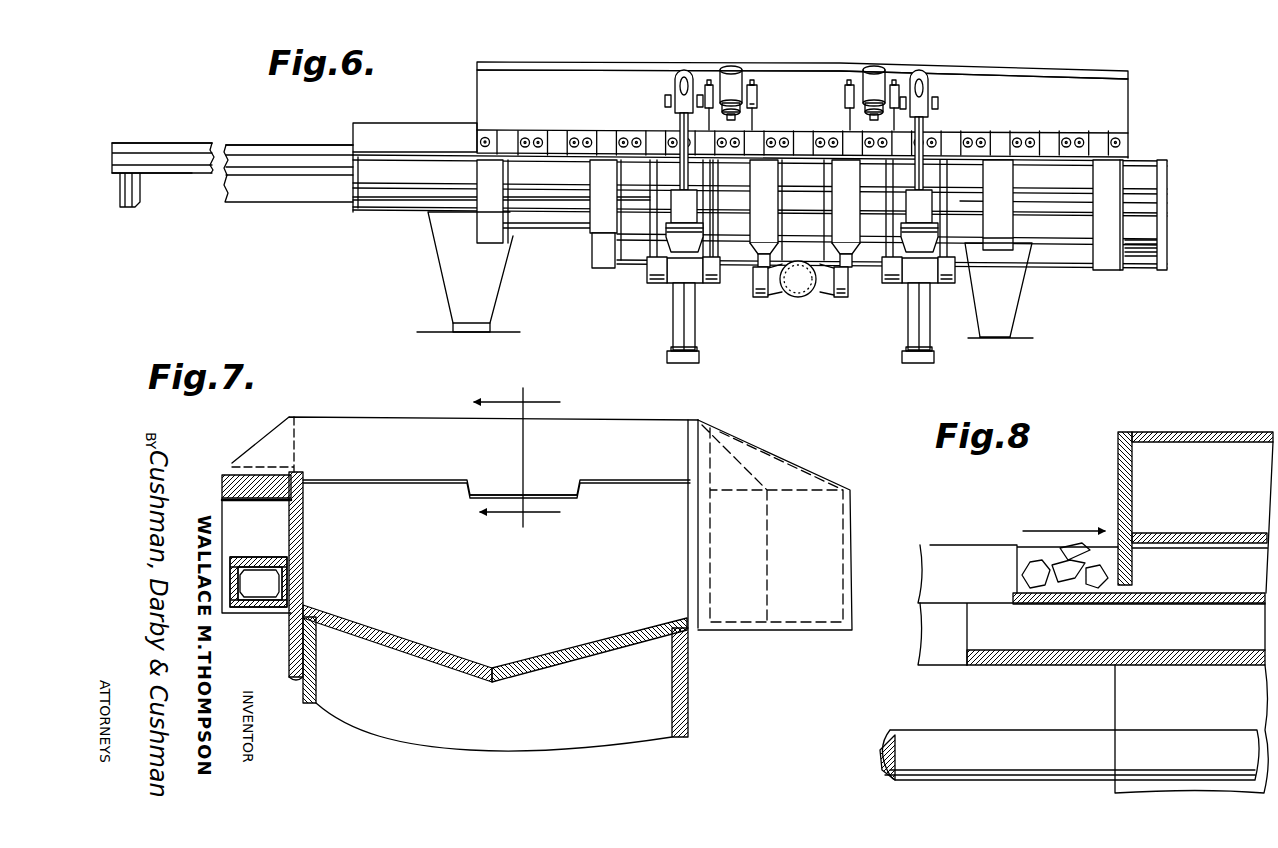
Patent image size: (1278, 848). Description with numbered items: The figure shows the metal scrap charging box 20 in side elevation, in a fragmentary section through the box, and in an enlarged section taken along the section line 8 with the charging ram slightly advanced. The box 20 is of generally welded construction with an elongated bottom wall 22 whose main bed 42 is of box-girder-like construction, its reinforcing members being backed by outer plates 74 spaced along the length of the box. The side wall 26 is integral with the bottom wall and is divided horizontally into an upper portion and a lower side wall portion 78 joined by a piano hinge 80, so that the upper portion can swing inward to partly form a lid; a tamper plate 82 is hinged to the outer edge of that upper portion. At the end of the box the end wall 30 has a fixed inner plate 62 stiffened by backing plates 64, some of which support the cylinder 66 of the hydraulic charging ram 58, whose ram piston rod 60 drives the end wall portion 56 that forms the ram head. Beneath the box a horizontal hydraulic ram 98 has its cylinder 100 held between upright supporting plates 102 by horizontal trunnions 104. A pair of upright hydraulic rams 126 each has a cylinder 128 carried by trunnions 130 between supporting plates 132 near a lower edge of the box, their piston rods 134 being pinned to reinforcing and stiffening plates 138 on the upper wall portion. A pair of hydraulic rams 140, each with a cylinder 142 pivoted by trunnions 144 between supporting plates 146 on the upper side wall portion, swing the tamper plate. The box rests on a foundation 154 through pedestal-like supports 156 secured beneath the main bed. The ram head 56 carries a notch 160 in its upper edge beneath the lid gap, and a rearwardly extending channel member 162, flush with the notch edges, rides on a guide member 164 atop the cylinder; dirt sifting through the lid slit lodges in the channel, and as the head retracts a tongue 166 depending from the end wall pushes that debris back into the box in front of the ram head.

In FIG. 7, the section line 8- 8 is at (517, 458).
In FIG. 6, the metal scrap charging box 20 is at (1083, 64).
In FIG. 7, the metal scrap charging box 20 is at (698, 698).
In FIG. 7, the bottom wall 22 is at (548, 679).
In FIG. 6, the side wall 26 is at (1077, 187).
In FIG. 7, the side wall 26 is at (303, 548).
In FIG. 7, the end wall 30 is at (824, 558).
In FIG. 8, the end wall 30 is at (1114, 495).
In FIG. 6, the main bed 42 is at (565, 224).
In FIG. 7, the main bed 42 is at (455, 650).
In FIG. 7, the end wall portion 56 is at (658, 495).
In FIG. 6, the hydraulic charging ram 58 is at (289, 205).
In FIG. 8, the ram piston rod 60 is at (1043, 713).
In FIG. 7, the inner plate 62 is at (618, 428).
In FIG. 8, the inner plate 62 is at (1122, 445).
In FIG. 6, the backing plates 64 is at (418, 124).
In FIG. 6, the cylinder 66 is at (258, 202).
In FIG. 6, the outer plates 74 is at (605, 270).
In FIG. 6, the lower side wall portion 78 is at (551, 178).
In FIG. 6, the piano hinge 80 is at (565, 130).
In FIG. 6, the tamper plate 82 is at (1118, 114).
In FIG. 6, the hydraulic ram 98 is at (805, 305).
In FIG. 6, the cylinder 100 is at (780, 298).
In FIG. 6, the upright supporting plates 102 is at (852, 262).
In FIG. 6, the horizontal trunnions 104 is at (826, 298).
In FIG. 6, the upright hydraulic rams 126 is at (666, 346).
In FIG. 6, the cylinder 128 is at (673, 313).
In FIG. 6, the trunnions 130 is at (700, 284).
In FIG. 6, the supporting plates 132 is at (658, 283).
In FIG. 6, the piston rod 134 is at (677, 178).
In FIG. 6, the reinforcing and stiffening plates 138 is at (675, 80).
In FIG. 6, the hydraulic rams 140 is at (750, 61).
In FIG. 6, the cylinder 142 is at (727, 66).
In FIG. 6, the trunnions 144 is at (757, 108).
In FIG. 6, the supporting plates 146 is at (848, 94).
In FIG. 6, the foundation 154 is at (437, 325).
In FIG. 6, the pedestal-like supports 156 is at (437, 242).
In FIG. 7, the notch 160 is at (561, 495).
In FIG. 6, the channel member 162 is at (287, 145).
In FIG. 8, the channel member 162 is at (980, 547).
In FIG. 6, the guide member 164 is at (192, 174).
In FIG. 7, the tongue 166 is at (475, 484).
In FIG. 8, the tongue 166 is at (1133, 575).